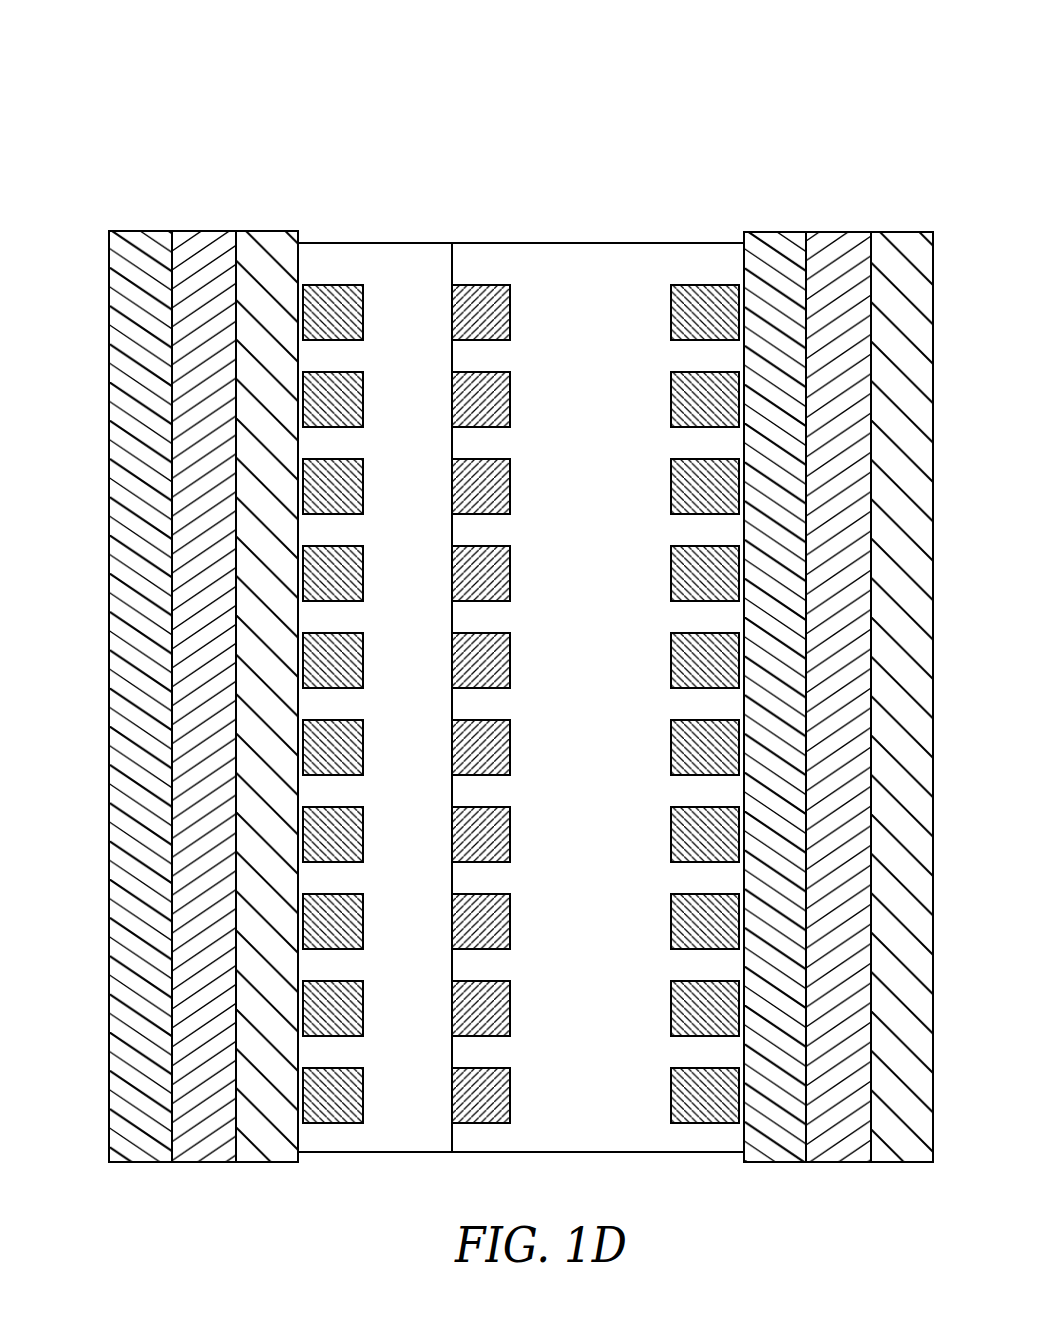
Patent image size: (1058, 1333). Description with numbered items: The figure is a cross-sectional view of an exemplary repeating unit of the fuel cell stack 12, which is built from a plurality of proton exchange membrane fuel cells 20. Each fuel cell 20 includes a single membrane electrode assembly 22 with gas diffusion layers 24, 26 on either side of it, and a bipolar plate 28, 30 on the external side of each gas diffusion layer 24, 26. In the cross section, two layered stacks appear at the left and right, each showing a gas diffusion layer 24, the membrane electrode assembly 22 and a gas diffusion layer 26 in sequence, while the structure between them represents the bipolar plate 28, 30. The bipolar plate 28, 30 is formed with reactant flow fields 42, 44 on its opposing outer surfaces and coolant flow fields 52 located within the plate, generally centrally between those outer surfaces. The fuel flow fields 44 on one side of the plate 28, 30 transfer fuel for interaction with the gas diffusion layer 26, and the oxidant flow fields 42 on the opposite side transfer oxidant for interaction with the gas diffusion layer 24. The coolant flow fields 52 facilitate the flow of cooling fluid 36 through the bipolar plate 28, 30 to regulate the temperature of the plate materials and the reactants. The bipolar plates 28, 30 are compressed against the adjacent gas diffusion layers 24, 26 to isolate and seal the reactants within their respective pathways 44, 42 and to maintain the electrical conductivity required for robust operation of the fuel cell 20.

The fuel cell stack 12 is at (475, 621).
The fuel cell 20 is at (150, 115).
The membrane electrode assembly 22 is at (210, 242).
The gas diffusion layer 24 is at (143, 237).
The gas diffusion layer 26 is at (262, 237).
The bipolar plate 28 is at (521, 629).
The bipolar plate 30 is at (538, 178).
The cooling fluid 36 is at (465, 310).
The oxidant flow fields 42 is at (710, 318).
The fuel flow fields 44 is at (323, 313).
The coolant flow fields 52 is at (500, 318).